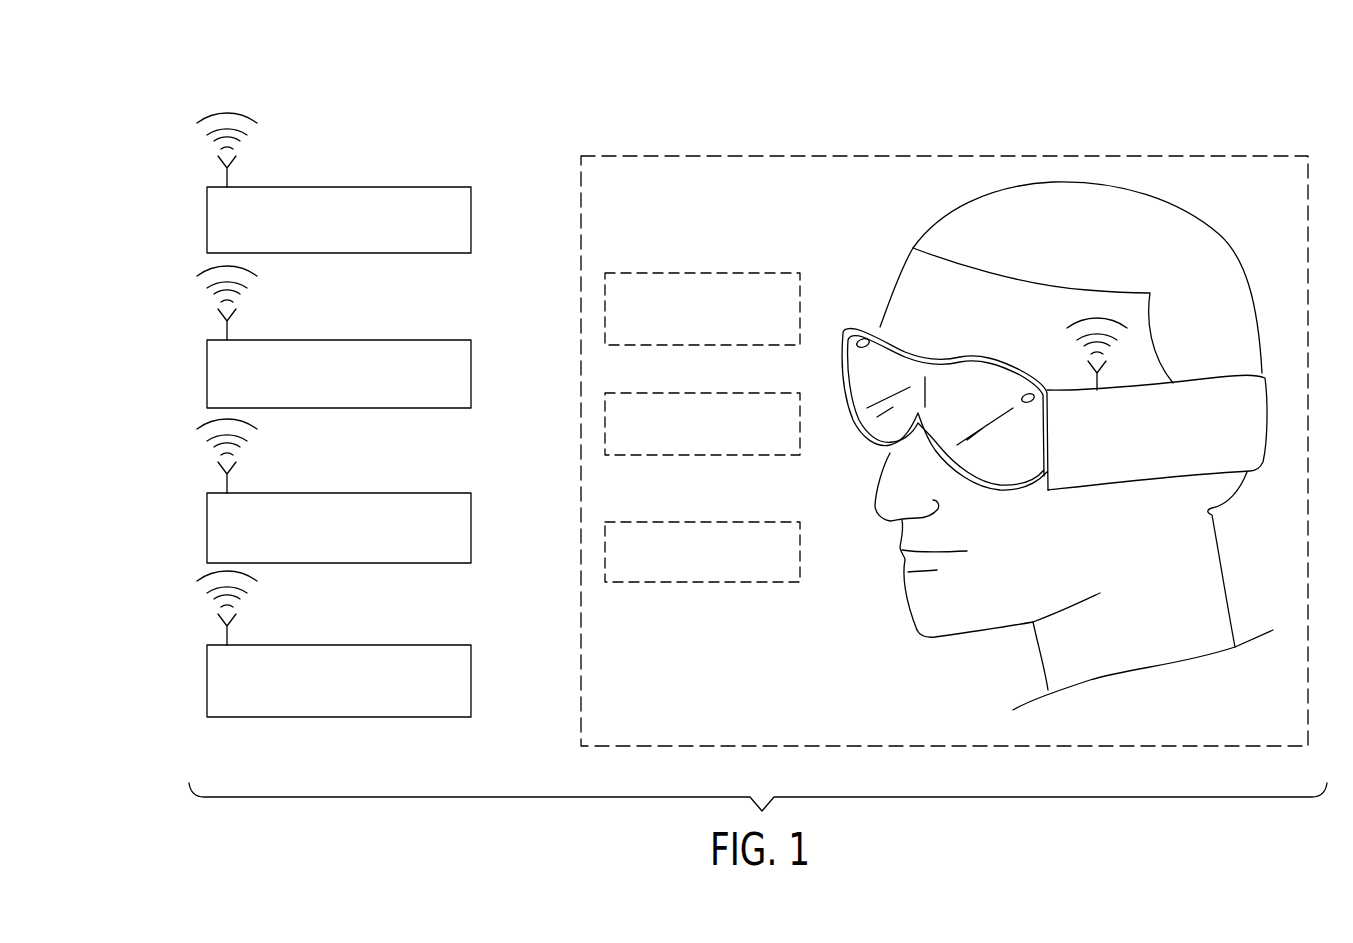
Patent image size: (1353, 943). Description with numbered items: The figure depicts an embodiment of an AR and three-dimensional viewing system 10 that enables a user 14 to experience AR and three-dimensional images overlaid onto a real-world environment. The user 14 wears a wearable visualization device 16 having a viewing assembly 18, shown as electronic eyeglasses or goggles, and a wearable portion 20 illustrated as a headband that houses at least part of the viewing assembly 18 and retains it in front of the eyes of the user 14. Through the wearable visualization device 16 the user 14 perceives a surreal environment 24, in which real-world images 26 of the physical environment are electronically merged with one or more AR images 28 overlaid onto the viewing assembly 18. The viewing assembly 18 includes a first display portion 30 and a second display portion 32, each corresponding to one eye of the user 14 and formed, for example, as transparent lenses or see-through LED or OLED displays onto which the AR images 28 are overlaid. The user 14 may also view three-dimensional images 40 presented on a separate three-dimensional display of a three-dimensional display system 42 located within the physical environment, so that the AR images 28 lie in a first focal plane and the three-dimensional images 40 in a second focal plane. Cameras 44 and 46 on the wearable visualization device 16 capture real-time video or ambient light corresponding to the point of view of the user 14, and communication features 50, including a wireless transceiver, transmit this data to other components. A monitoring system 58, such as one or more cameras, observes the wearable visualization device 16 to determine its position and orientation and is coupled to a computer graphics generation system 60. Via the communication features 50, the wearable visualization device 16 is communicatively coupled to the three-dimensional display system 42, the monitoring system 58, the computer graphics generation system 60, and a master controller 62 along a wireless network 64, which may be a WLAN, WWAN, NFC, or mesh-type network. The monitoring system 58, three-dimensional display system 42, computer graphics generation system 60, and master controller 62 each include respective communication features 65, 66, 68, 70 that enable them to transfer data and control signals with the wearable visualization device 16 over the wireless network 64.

The AR and 3-D viewing system 10 is at (1193, 115).
The user 14 is at (1237, 255).
The wearable visualization device 16 is at (937, 392).
The viewing assembly 18 is at (937, 409).
The wearable portion 20 is at (1157, 421).
The surreal environment 24 is at (1063, 156).
The real-world images 26 is at (702, 273).
The AR images 28 is at (702, 393).
The first display portion 30 is at (890, 380).
The second display portion 32 is at (978, 410).
The 3-D images 40 is at (702, 522).
The 3-D display system 42 is at (485, 532).
The camera 44 is at (853, 341).
The camera 46 is at (1036, 393).
The communication features 50 is at (1097, 380).
The monitoring system 58 is at (485, 690).
The computer graphics generation system 60 is at (485, 380).
The master controller 62 is at (485, 226).
The wireless network 64 is at (153, 185).
The communication features 65 is at (229, 640).
The communication features 66 is at (229, 488).
The communication features 68 is at (229, 335).
The communication features 70 is at (229, 182).